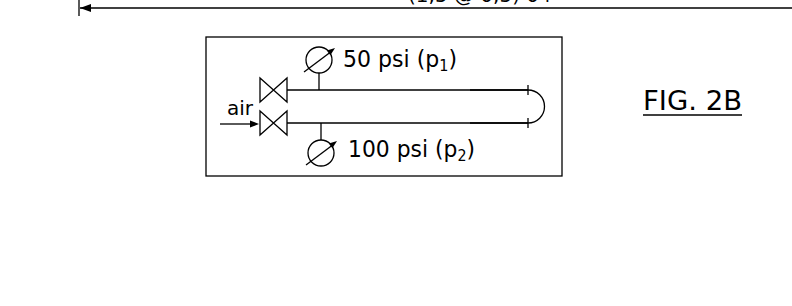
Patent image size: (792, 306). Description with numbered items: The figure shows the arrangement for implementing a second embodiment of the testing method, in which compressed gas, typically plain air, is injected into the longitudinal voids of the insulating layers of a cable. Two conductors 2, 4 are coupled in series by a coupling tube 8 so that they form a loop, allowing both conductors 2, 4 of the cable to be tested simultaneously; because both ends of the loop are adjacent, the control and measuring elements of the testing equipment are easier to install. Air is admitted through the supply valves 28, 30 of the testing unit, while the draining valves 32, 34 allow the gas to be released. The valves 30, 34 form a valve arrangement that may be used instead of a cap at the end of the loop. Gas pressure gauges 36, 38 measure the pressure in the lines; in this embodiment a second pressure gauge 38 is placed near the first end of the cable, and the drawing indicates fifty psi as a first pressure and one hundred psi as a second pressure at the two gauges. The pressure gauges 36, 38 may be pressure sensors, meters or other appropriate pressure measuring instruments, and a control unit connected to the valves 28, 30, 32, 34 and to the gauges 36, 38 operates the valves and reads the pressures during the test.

The conductor 2 is at (498, 123).
The conductor 4 is at (498, 88).
The coupling tube 8 is at (546, 102).
The supply valve 28 is at (260, 126).
The supply valve 30 is at (266, 78).
The draining valve 32 is at (336, 126).
The draining valve 34 is at (339, 65).
The gas pressure gauge 36 is at (309, 151).
The gas pressure gauge 38 is at (318, 47).